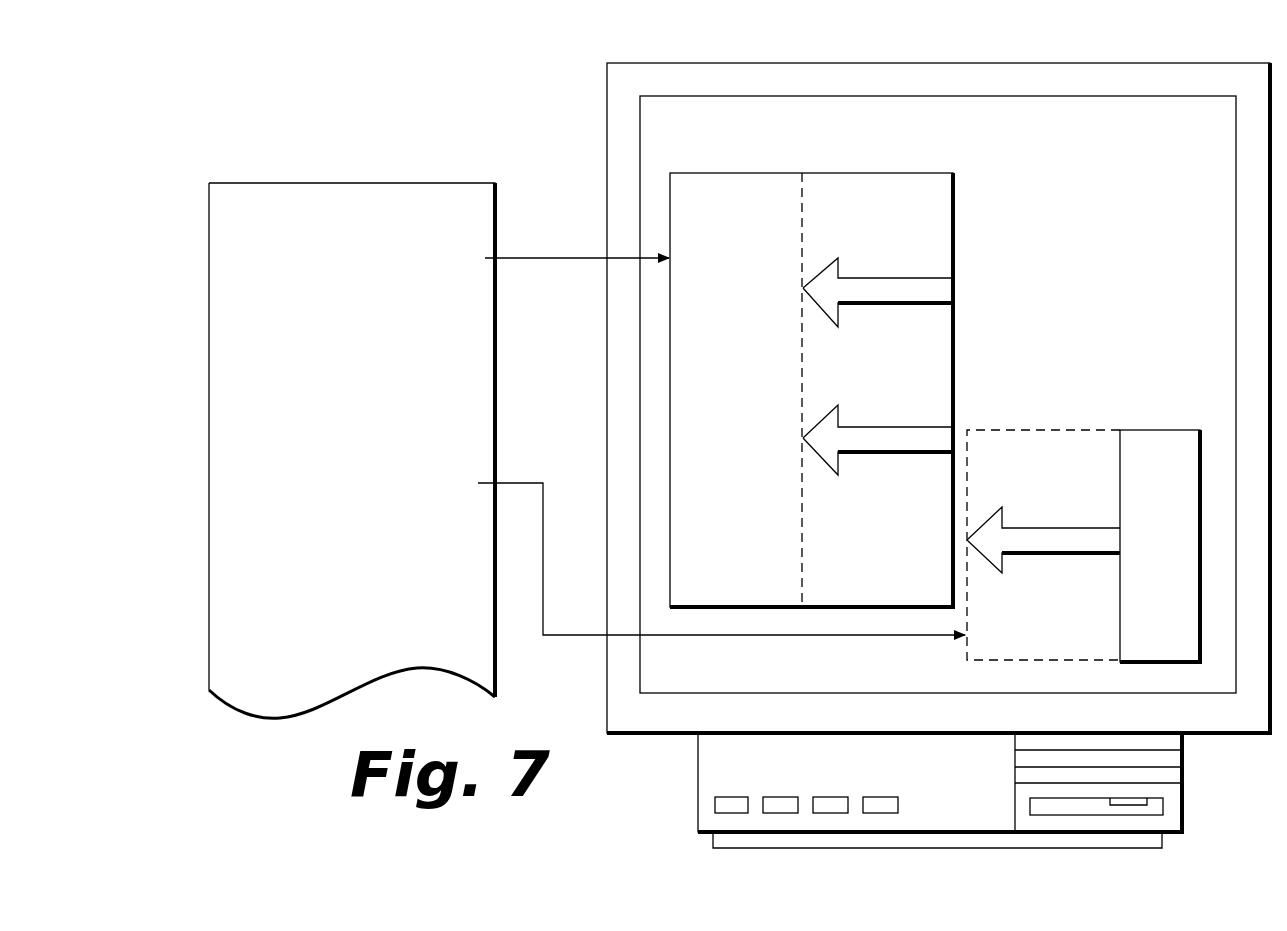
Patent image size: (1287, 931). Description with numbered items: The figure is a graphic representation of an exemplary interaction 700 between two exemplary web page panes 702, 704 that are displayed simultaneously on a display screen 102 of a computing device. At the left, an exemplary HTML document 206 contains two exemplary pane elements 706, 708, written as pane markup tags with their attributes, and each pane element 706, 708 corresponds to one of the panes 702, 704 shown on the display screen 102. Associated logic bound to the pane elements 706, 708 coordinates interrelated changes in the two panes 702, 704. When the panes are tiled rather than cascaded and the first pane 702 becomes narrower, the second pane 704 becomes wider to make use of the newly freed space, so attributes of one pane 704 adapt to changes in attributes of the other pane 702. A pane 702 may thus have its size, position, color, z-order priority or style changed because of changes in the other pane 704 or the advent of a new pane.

The display screen 102 is at (723, 63).
The interaction 700 is at (1030, 325).
The first pane 702 is at (803, 173).
The second pane 704 is at (1067, 430).
The HTML document 206 is at (340, 183).
The first pane element 706 is at (226, 257).
The second pane element 708 is at (220, 482).